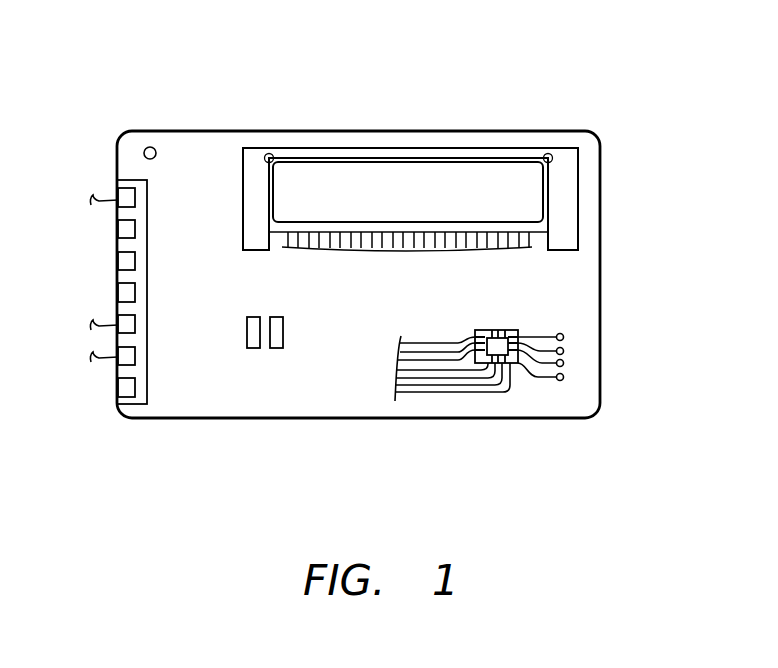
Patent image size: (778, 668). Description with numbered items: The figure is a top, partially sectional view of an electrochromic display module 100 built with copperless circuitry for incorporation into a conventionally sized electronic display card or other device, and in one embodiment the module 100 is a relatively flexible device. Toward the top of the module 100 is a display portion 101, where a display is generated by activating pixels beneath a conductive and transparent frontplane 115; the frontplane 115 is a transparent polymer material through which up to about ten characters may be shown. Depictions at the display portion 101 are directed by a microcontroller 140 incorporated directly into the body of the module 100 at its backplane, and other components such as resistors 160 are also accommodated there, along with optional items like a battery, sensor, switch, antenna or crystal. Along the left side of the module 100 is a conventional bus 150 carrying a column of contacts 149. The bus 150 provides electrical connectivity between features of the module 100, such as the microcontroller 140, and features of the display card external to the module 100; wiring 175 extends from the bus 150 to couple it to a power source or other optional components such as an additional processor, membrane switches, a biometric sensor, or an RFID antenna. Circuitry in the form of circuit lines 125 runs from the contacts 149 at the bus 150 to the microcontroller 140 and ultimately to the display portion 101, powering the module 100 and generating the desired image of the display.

The electrochromic display module 100 is at (153, 66).
The display portion 101 is at (436, 182).
The transparent frontplane 115 is at (523, 188).
The circuit lines 125 is at (503, 250).
The microcontroller 140 is at (497, 343).
The contacts 149 is at (130, 297).
The bus 150 is at (125, 183).
The resistors 160 is at (272, 366).
The wiring 175 is at (97, 205).